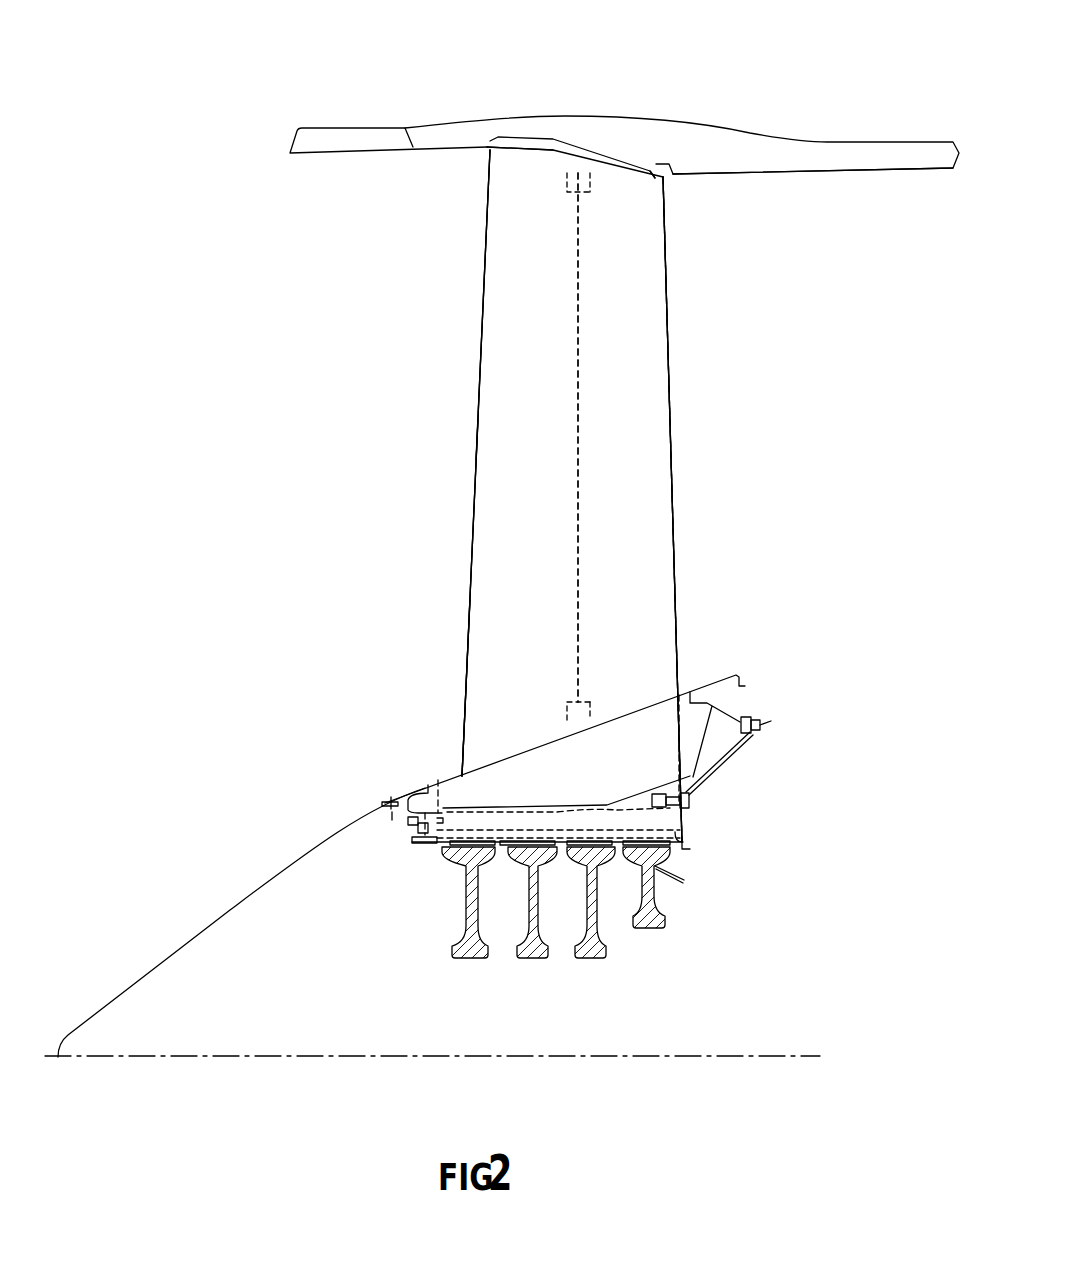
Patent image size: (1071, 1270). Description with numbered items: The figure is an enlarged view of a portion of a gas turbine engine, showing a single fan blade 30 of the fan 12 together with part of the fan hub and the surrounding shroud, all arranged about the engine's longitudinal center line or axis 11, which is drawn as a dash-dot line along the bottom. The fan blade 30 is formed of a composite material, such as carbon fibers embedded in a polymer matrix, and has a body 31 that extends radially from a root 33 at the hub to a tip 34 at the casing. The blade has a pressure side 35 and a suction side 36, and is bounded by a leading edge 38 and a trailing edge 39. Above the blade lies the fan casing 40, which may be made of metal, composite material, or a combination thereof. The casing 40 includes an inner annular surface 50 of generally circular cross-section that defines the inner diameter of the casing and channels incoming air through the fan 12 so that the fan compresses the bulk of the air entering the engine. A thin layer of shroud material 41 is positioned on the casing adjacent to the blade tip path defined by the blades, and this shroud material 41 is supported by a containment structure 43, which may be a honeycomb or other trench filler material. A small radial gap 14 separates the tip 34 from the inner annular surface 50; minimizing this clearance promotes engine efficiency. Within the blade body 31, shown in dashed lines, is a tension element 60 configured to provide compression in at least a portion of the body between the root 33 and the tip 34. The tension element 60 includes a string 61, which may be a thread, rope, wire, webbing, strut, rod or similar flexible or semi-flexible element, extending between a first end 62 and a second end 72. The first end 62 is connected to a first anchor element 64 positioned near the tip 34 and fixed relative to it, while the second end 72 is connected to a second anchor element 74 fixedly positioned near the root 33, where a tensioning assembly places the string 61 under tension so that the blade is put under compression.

The longitudinal center line or axis 11 is at (312, 1055).
The fan 12 is at (237, 843).
The radial gap 14 is at (485, 150).
The fan blade 30 is at (345, 486).
The body 31 is at (490, 668).
The root 33 is at (497, 780).
The tip 34 is at (663, 178).
The pressure side 35 is at (546, 479).
The suction side 36 is at (477, 435).
The leading edge 38 is at (484, 324).
The trailing edge 39 is at (672, 446).
The fan casing 40 is at (536, 86).
The shroud material 41 is at (595, 146).
The containment structure 43 is at (462, 128).
The inner annular surface 50 is at (650, 177).
The tension element 60 is at (616, 360).
The string 61 is at (582, 283).
The first end 62 is at (578, 193).
The first anchor element 64 is at (590, 182).
The second end 72 is at (580, 700).
The second anchor element 74 is at (590, 717).